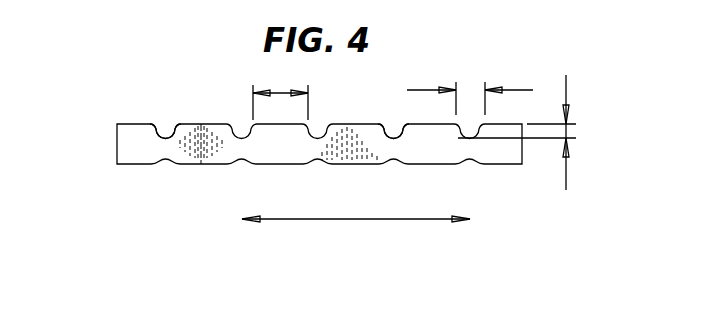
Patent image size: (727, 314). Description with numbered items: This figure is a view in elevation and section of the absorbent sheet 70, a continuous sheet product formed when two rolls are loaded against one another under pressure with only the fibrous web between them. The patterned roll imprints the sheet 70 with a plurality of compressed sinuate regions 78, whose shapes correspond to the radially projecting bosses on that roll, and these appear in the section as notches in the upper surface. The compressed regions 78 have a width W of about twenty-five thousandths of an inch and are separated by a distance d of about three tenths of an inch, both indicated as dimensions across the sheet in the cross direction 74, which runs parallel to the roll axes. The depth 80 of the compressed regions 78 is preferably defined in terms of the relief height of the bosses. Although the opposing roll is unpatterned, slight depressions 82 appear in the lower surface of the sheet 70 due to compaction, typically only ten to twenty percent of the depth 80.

The sheet 70 is at (117, 136).
The compressed sinuate regions 78 is at (167, 136).
The depressions 82 is at (322, 164).
The cross direction 74 is at (353, 219).
The depth 80 is at (566, 90).
The distance d is at (280, 92).
The width W is at (528, 90).